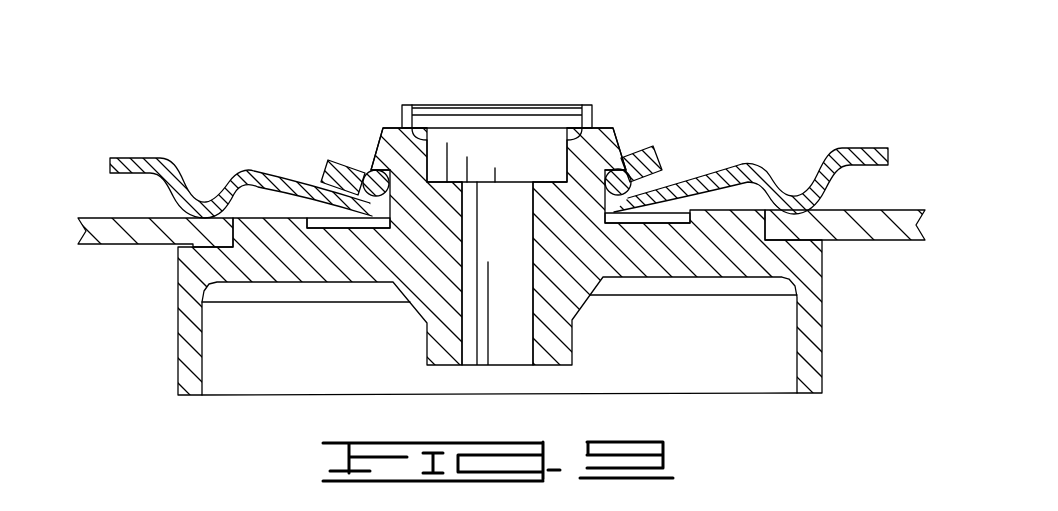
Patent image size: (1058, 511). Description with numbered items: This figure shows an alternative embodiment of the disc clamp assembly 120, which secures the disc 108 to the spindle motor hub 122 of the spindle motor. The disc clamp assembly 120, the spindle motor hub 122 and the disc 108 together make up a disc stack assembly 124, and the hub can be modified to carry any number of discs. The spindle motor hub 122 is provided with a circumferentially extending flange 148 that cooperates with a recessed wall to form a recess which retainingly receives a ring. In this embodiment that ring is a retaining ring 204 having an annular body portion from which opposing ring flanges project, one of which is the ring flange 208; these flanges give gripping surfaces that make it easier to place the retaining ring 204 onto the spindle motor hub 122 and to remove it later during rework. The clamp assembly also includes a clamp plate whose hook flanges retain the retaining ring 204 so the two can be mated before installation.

The disc 108 is at (138, 238).
The disc clamp assembly 120 is at (238, 76).
The spindle motor hub 122 is at (498, 100).
The disc stack assembly 124 is at (152, 330).
The circumferentially extending flange 148 is at (616, 129).
The retaining ring 204 is at (361, 150).
The ring flange 208 is at (328, 160).